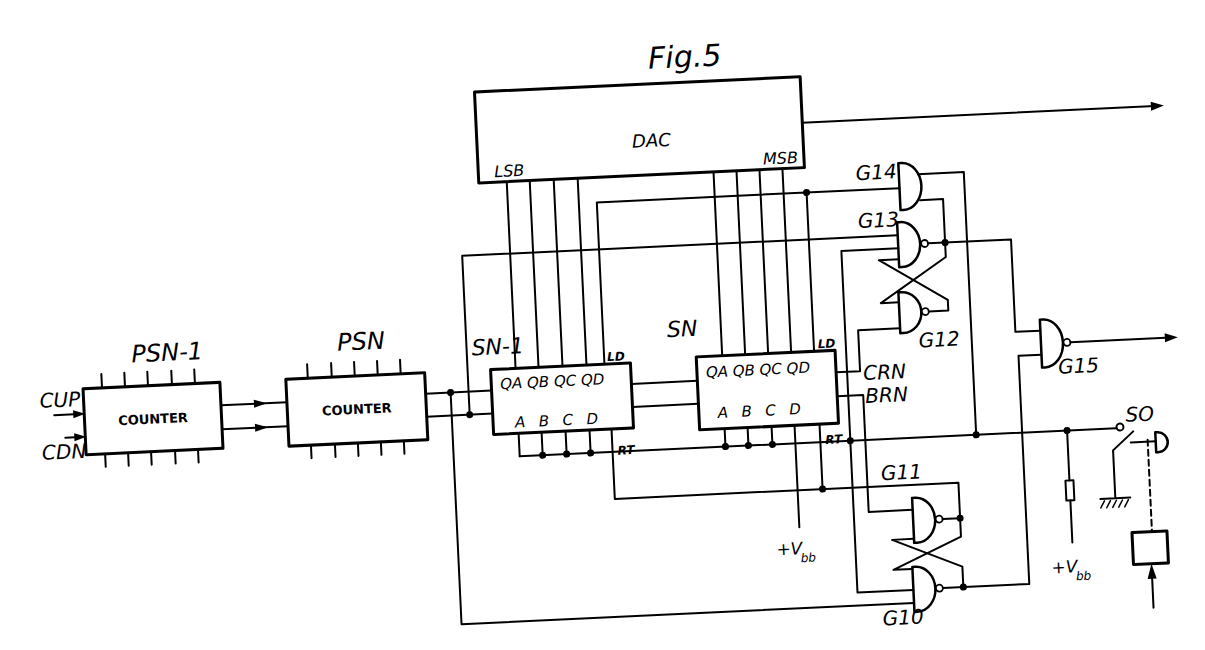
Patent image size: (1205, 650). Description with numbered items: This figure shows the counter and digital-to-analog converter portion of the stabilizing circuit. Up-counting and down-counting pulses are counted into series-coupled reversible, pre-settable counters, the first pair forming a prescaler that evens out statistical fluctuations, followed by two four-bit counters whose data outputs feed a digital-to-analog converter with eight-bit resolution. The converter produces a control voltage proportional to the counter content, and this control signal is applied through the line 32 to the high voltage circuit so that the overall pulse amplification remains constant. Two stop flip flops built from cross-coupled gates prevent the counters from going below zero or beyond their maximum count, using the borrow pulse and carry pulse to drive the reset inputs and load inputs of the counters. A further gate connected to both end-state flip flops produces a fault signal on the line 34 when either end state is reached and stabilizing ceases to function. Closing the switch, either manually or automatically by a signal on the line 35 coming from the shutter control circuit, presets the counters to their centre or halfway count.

The line 32 is at (986, 122).
The line 34 is at (1145, 354).
The line 35 is at (1143, 612).